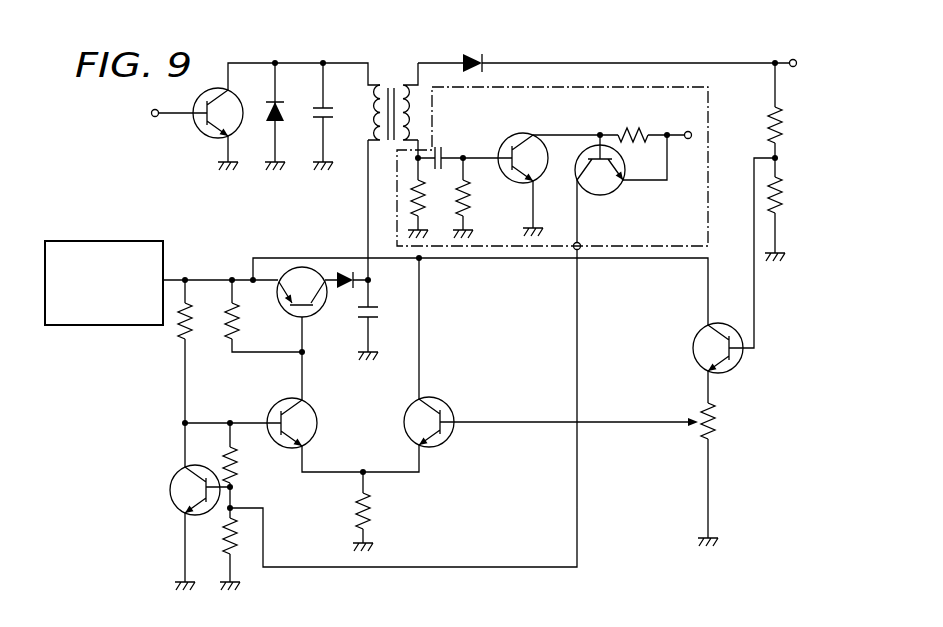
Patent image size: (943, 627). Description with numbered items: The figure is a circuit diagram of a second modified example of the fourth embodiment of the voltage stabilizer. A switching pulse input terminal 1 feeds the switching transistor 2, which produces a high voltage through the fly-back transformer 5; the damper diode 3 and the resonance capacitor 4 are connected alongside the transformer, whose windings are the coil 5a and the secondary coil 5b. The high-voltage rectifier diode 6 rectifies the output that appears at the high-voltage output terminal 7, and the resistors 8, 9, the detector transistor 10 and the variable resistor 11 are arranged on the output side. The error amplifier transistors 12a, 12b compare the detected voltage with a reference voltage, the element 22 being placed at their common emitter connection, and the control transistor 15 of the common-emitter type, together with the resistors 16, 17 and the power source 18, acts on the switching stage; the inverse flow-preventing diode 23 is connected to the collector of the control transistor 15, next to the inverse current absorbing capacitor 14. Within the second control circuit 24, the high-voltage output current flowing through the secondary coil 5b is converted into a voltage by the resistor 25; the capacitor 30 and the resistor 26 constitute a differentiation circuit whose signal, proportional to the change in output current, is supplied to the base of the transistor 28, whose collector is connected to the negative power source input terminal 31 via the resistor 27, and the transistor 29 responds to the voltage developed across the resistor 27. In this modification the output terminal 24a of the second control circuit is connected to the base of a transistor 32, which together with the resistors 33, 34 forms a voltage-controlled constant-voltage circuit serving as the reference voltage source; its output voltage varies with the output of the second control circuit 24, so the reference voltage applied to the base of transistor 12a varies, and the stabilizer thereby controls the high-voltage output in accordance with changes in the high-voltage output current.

The switching pulse input terminal 1 is at (152, 116).
The switching transistor 2 is at (198, 122).
The damper diode 3 is at (270, 108).
The resonance capacitor 4 is at (318, 108).
The fly-back transformer 5 is at (390, 88).
The primary winding 5a is at (375, 115).
The secondary coil 5b is at (418, 108).
The high-voltage rectifier diode 6 is at (475, 58).
The high-voltage output terminal 7 is at (790, 58).
The resistor 8 is at (768, 128).
The resistor 9 is at (770, 201).
The detector transistor 10 is at (720, 324).
The variable resistor 11 is at (718, 426).
The error amplifier transistor 12a is at (315, 437).
The error amplifier transistor 12b is at (447, 440).
The inverse current absorbing capacitor 14 is at (376, 308).
The control transistor 15 is at (312, 318).
The resistor 16 is at (228, 325).
The resistor 17 is at (180, 330).
The power source 18 is at (110, 240).
The resistor 22 is at (360, 512).
The inverse flow-preventing diode 23 is at (345, 292).
The second control circuit 24 is at (709, 138).
The output terminal 24a is at (579, 243).
The resistor 25 is at (415, 203).
The resistor 26 is at (468, 198).
The resistor 27 is at (632, 128).
The transistor 28 is at (507, 138).
The transistor 29 is at (612, 193).
The capacitor 30 is at (440, 150).
The negative power source input terminal 31 is at (688, 140).
The transistor 32 is at (172, 490).
The resistor 33 is at (226, 528).
The resistor 34 is at (247, 450).